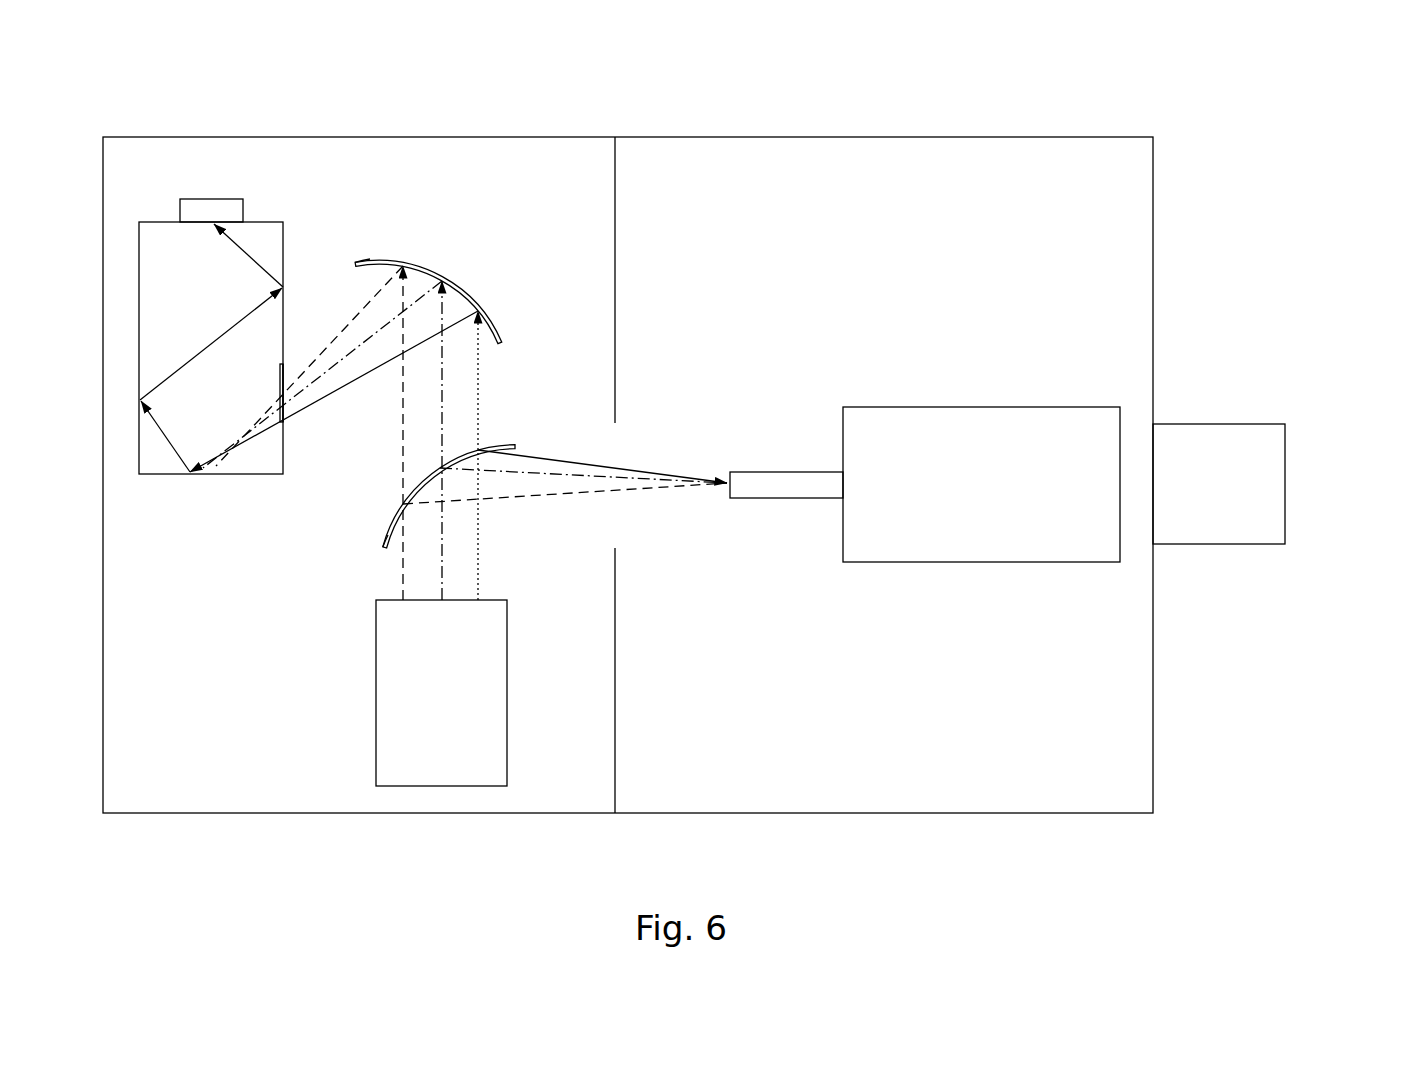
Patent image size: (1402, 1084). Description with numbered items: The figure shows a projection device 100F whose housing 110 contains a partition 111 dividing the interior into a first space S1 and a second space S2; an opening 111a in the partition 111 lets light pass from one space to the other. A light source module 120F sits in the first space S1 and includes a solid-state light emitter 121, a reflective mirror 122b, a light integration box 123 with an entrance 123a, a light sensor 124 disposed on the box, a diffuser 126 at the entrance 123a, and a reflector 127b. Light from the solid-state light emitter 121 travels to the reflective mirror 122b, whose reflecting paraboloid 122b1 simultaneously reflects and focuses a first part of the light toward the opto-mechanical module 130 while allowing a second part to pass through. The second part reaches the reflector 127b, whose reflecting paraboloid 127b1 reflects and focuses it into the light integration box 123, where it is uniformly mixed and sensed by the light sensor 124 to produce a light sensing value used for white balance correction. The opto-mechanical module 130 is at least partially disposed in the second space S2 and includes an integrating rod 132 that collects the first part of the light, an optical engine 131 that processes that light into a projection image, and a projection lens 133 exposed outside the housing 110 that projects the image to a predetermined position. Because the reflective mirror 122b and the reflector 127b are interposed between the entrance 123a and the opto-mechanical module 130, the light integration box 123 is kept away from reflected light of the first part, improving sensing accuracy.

The projection device 100F is at (78, 82).
The housing 110 is at (1037, 137).
The partition 111 is at (615, 177).
The opening 111a is at (619, 450).
The light source module 120F is at (172, 167).
The solid-state light emitter 121 is at (443, 787).
The reflective mirror 122b is at (385, 532).
The reflecting paraboloid 122b1 is at (390, 548).
The light integration box 123 is at (258, 222).
The entrance 123a is at (289, 364).
The light sensor 124 is at (220, 198).
The diffuser 126 is at (283, 428).
The reflector 127b is at (432, 264).
The reflecting paraboloid 127b1 is at (356, 264).
The opto-mechanical module 130 is at (1057, 553).
The optical engine 131 is at (983, 541).
The integrating rod 132 is at (779, 484).
The projection lens 133 is at (1193, 533).
The first space S1 is at (180, 776).
The second space S2 is at (1103, 776).